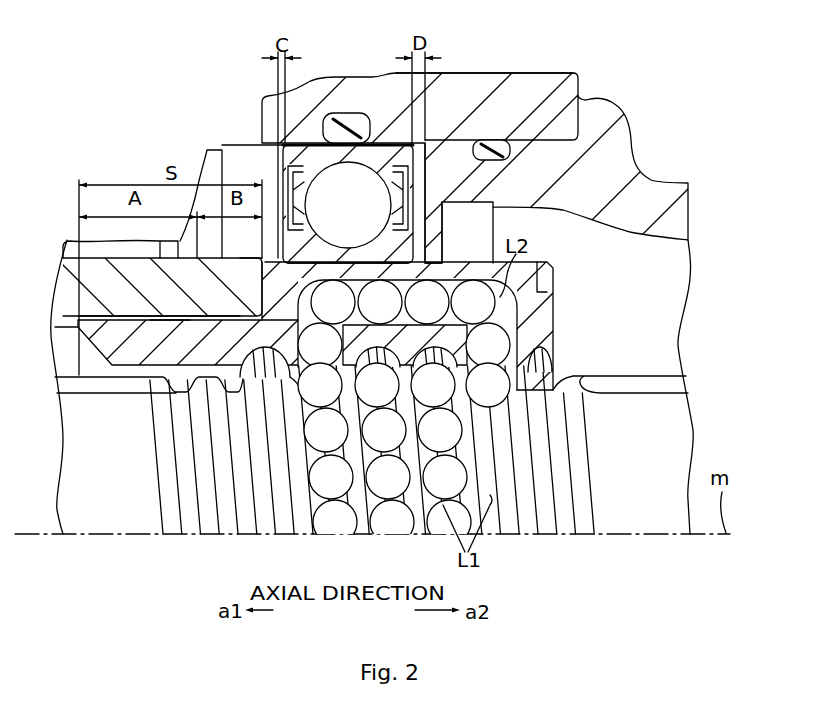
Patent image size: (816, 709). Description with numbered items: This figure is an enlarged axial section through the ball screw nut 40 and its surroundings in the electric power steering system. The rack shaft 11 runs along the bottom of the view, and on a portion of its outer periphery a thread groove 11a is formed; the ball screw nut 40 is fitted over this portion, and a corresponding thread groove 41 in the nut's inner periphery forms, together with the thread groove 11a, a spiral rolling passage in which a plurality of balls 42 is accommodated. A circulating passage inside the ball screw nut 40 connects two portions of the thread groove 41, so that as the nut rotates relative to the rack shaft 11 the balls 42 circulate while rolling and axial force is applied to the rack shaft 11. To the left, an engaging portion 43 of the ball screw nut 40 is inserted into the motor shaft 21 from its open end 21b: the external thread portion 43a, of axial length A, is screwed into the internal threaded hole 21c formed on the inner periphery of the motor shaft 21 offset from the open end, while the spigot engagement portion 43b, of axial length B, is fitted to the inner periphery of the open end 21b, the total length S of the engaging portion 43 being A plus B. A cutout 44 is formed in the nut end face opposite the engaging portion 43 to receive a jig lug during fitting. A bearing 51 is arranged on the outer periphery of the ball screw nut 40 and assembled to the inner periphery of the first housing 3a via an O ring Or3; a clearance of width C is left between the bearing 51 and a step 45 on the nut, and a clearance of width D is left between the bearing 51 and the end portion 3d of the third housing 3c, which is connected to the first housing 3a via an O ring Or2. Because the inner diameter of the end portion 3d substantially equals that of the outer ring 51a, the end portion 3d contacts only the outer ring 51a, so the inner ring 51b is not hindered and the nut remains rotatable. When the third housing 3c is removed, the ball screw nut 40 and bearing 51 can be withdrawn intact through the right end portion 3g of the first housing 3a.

The first housing 3a is at (479, 75).
The third housing 3c is at (489, 285).
The end portion of the third housing 3d is at (433, 153).
The right end portion of the first housing 3g is at (567, 85).
The rack shaft 11 is at (371, 437).
The thread groove 11a is at (562, 378).
The motor shaft 21 is at (154, 237).
The open end 21b is at (246, 258).
The internal threaded hole 21c is at (125, 316).
The ball screw nut 40 is at (336, 337).
The thread groove 41 is at (483, 340).
The balls 42 is at (380, 550).
The engaging portion 43 is at (176, 341).
The external thread portion 43a is at (165, 319).
The spigot engagement portion 43b is at (222, 316).
The cutout 44 is at (553, 284).
The step 45 is at (250, 259).
The bearing 51 is at (345, 160).
The outer ring 51a is at (386, 150).
The inner ring 51b is at (405, 250).
The O ring Or2 is at (473, 153).
The O ring Or3 is at (350, 116).